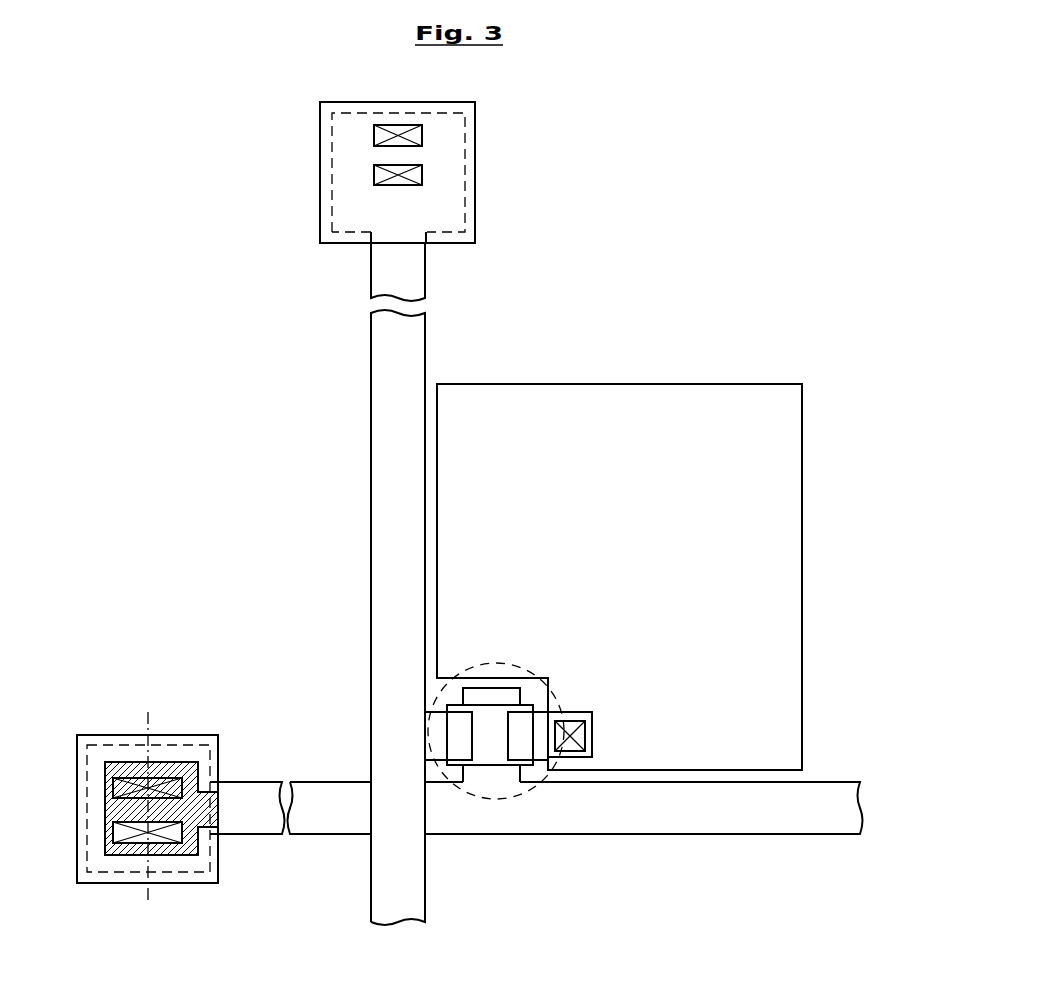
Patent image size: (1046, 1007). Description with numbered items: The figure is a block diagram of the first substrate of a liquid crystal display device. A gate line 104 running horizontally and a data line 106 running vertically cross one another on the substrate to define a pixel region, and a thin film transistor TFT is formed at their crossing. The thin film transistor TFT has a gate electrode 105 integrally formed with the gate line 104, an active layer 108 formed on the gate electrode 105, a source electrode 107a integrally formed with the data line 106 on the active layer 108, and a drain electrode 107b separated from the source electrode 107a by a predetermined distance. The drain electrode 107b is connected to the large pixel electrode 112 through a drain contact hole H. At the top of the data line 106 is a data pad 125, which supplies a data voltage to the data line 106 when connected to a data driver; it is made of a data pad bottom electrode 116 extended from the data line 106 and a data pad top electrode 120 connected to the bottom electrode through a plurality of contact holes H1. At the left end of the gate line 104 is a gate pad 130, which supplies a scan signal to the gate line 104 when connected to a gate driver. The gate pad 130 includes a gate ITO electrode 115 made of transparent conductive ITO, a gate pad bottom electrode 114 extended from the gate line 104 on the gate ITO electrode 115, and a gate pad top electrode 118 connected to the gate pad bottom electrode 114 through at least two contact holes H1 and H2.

The gate line 104 is at (699, 822).
The gate electrode 105 is at (491, 703).
The data line 106 is at (418, 353).
The source electrode 107a is at (460, 733).
The drain electrode 107b is at (523, 727).
The active layer 108 is at (497, 763).
The pixel electrode 112 is at (790, 592).
The gate pad bottom electrode 114 is at (115, 745).
The gate ITO electrode 115 is at (187, 763).
The data pad bottom electrode 116 is at (466, 183).
The gate pad top electrode 118 is at (168, 733).
The data pad top electrode 120 is at (476, 143).
The data pad 125 is at (463, 172).
The gate pad 130 is at (165, 829).
The thin film transistor TFT is at (472, 744).
The drain contact hole H is at (594, 735).
The contact hole H1 is at (398, 125).
The contact hole H2 is at (133, 843).